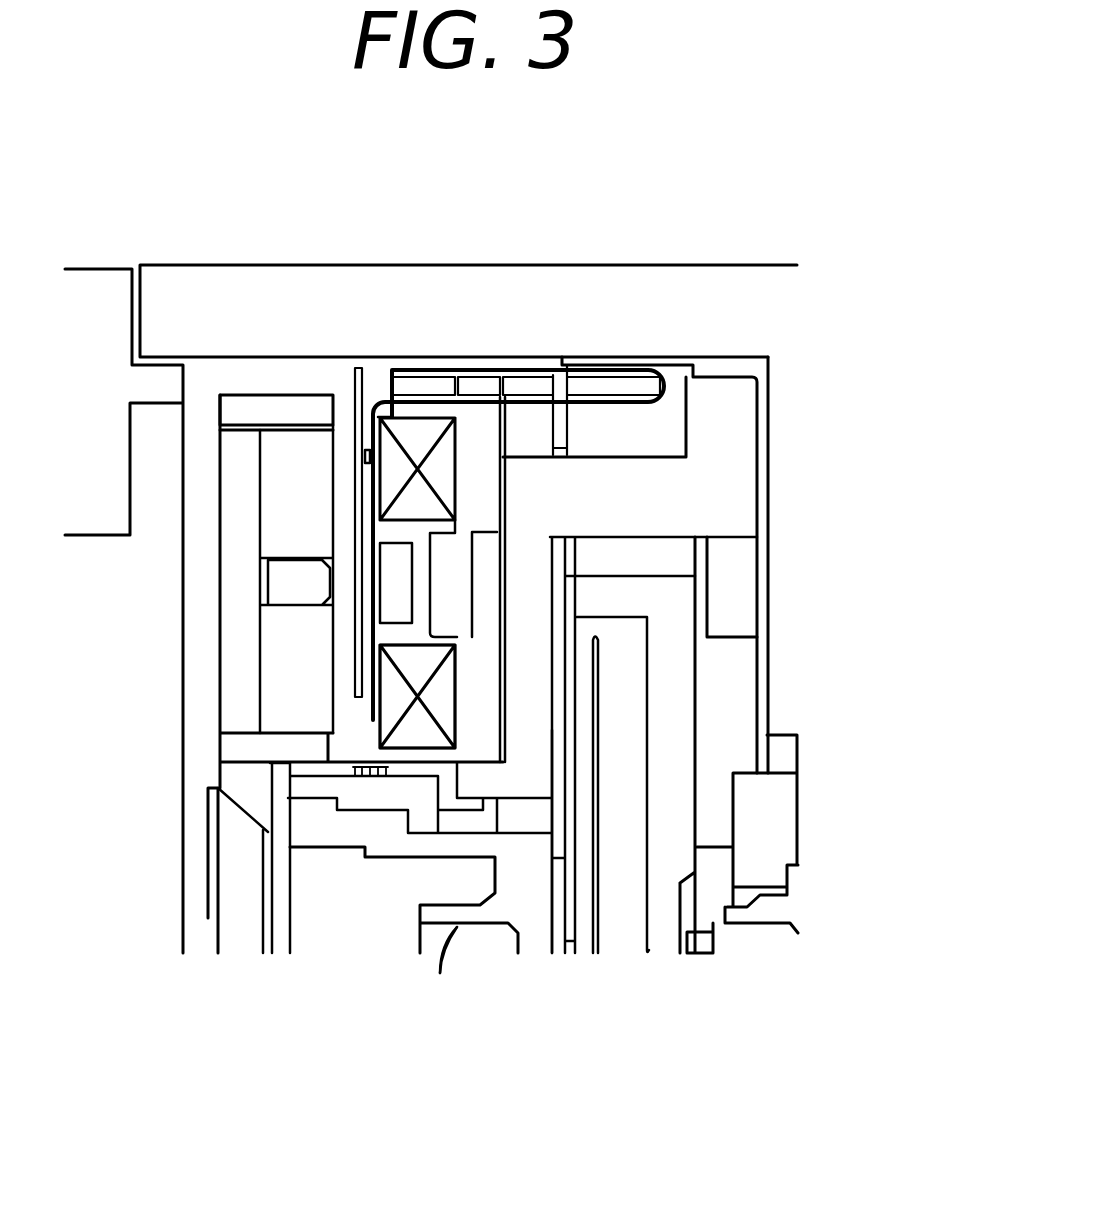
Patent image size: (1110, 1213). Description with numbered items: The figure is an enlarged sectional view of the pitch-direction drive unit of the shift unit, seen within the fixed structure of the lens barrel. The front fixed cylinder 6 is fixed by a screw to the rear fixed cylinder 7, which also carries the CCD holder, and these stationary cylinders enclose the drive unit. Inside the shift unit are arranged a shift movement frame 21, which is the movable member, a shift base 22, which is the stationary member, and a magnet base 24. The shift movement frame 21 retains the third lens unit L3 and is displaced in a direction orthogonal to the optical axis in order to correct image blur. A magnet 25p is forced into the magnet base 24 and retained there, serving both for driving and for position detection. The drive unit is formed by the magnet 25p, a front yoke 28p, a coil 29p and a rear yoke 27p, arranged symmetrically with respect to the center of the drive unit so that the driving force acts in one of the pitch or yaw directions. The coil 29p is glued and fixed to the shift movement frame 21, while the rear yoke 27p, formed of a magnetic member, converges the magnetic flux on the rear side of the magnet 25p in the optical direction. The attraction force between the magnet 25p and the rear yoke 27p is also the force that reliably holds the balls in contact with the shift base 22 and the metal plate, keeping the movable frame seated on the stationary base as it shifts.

The front fixed cylinder 6 is at (85, 305).
The rear fixed cylinder 7 is at (513, 285).
The shift movement frame 21 is at (735, 505).
The shift base 22 is at (318, 825).
The magnet base 24 is at (280, 408).
The magnet 25p is at (288, 710).
The rear yoke 27p is at (390, 585).
The front yoke 28p is at (240, 605).
The coil 29p is at (417, 735).
The third lens unit L3 is at (482, 947).